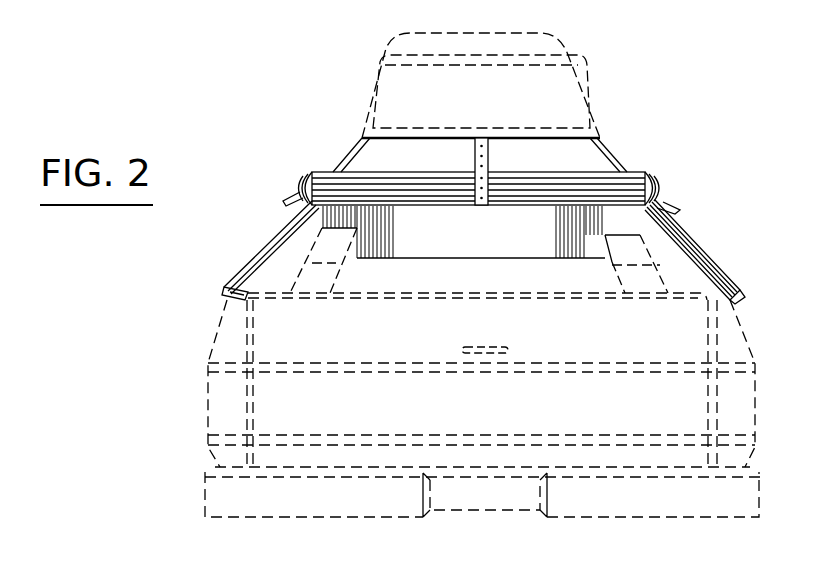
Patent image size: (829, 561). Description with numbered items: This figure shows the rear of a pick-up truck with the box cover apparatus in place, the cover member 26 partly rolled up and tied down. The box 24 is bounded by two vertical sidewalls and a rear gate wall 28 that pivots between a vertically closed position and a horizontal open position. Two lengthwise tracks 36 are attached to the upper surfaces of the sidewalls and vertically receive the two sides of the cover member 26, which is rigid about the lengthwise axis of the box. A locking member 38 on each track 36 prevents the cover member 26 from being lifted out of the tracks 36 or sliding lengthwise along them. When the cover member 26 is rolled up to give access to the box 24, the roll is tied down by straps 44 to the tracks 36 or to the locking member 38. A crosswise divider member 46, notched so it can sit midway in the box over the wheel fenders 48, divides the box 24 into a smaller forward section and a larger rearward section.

The box 24 is at (488, 287).
The cover member 26 is at (627, 170).
The rear gate wall 28 is at (589, 338).
The lengthwise tracks 36 is at (276, 240).
The locking member 38 is at (224, 285).
The straps 44 is at (291, 196).
The crosswise divider member 46 is at (488, 247).
The wheel fenders 48 is at (637, 253).